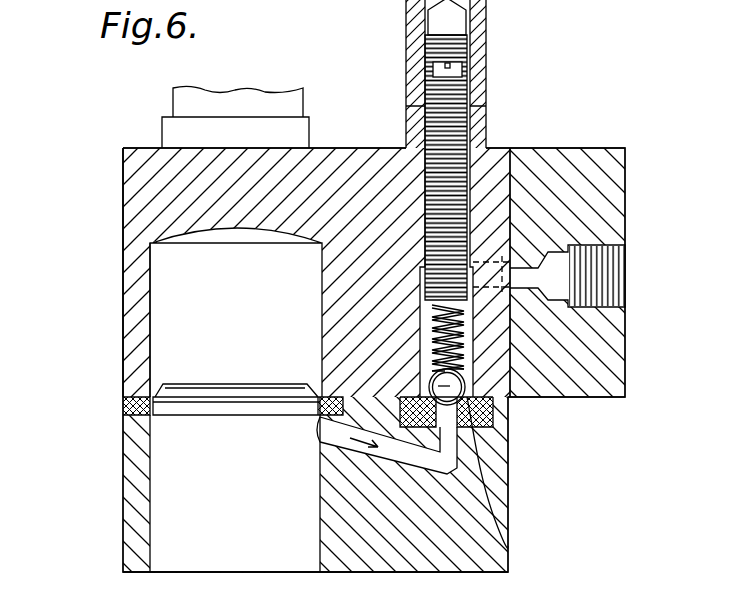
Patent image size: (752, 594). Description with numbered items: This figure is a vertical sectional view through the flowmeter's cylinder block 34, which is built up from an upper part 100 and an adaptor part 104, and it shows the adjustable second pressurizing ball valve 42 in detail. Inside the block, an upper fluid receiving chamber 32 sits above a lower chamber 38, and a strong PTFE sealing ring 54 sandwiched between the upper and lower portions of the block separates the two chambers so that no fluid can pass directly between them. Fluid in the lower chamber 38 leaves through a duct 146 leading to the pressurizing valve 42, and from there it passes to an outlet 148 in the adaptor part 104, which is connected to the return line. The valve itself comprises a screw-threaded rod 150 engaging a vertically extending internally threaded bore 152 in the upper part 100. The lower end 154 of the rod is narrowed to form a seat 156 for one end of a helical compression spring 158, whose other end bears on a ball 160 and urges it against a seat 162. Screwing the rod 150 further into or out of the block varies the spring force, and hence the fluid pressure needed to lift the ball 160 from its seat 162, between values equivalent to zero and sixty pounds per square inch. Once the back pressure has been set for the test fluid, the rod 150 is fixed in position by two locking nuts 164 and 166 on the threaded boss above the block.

The upper part 100 is at (145, 192).
The pressurizing spring-loaded ball valve 42 is at (470, 162).
The upper fluid receiving chamber 32 is at (183, 285).
The cylinder block 34 is at (130, 342).
The PTFE sealing ring 54 is at (123, 402).
The lower chamber 38 is at (165, 490).
The locking nut 164 is at (413, 124).
The locking nut 166 is at (414, 30).
The screw-threaded rod 150 is at (425, 250).
The internally threaded bore 152 is at (420, 276).
The lower end 154 is at (430, 312).
The helical compression spring 158 is at (430, 348).
The seat 156 is at (466, 385).
The adaptor part 104 is at (612, 372).
The outlet 148 is at (597, 265).
The seat 162 is at (508, 540).
The ball 160 is at (390, 399).
The duct 146 is at (392, 452).